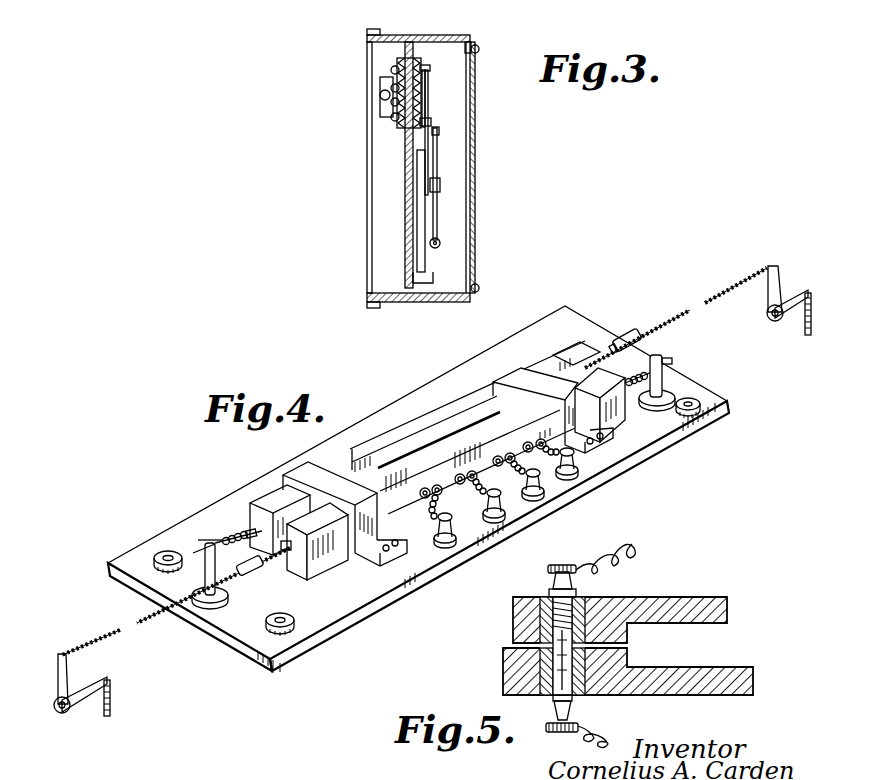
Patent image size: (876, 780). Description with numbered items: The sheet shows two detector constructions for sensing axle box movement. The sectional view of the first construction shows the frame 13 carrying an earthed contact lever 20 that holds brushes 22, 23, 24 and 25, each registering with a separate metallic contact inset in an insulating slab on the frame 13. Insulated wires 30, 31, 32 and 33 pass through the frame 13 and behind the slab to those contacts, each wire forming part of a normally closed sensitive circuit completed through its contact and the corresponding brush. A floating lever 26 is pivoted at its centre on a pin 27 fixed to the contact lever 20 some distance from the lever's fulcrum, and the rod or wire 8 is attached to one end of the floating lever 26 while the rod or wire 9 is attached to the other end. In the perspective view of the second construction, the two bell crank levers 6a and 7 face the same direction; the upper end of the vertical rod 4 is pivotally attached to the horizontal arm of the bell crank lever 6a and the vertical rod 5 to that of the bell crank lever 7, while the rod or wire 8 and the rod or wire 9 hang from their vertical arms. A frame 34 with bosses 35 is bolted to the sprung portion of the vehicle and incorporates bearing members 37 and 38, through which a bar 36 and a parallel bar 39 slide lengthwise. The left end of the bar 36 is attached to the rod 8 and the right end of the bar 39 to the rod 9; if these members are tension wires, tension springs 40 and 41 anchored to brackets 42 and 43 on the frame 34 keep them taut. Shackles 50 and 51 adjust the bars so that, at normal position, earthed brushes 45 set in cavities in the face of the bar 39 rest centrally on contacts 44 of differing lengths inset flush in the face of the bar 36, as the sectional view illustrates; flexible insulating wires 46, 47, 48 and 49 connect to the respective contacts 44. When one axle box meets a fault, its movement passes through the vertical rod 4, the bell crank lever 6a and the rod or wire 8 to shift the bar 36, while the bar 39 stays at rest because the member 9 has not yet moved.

In FIG. 3, the frame 13 is at (435, 34).
In FIG. 3, the brush 22 is at (430, 69).
In FIG. 3, the insulated wire 30 is at (391, 70).
In FIG. 3, the insulated wire 31 is at (391, 88).
In FIG. 3, the brush 23 is at (428, 88).
In FIG. 3, the contact lever 20 is at (421, 95).
In FIG. 3, the insulated wire 32 is at (391, 103).
In FIG. 3, the brush 24 is at (428, 108).
In FIG. 3, the insulated wire 33 is at (392, 119).
In FIG. 3, the brush 25 is at (430, 121).
In FIG. 3, the pin 27 is at (440, 188).
In FIG. 3, the floating lever 26 is at (437, 208).
In FIG. 4, the rod or wire 9 is at (680, 315).
In FIG. 4, the bell crank lever 7 is at (779, 272).
In FIG. 4, the vertical rod 5 is at (803, 318).
In FIG. 4, the shackle 51 is at (627, 332).
In FIG. 4, the bar 36 is at (325, 562).
In FIG. 5, the bar 36 is at (655, 695).
In FIG. 4, the tension spring 40 is at (640, 372).
In FIG. 4, the bar 39 is at (403, 447).
In FIG. 5, the bar 39 is at (683, 600).
In FIG. 4, the bearing member 38 is at (510, 376).
In FIG. 4, the bracket 42 is at (672, 362).
In FIG. 4, the boss 35 is at (168, 550).
In FIG. 4, the bearing member 37 is at (316, 470).
In FIG. 4, the frame 34 is at (637, 455).
In FIG. 4, the flexible insulating wire 49 is at (572, 478).
In FIG. 4, the flexible insulating wire 48 is at (513, 478).
In FIG. 4, the flexible insulating wire 47 is at (478, 490).
In FIG. 4, the flexible insulating wire 46 is at (428, 515).
In FIG. 4, the tension spring 41 is at (244, 533).
In FIG. 4, the shackle 50 is at (258, 570).
In FIG. 4, the bracket 43 is at (210, 600).
In FIG. 4, the rod or wire 8 is at (150, 623).
In FIG. 4, the vertical rod 4 is at (111, 698).
In FIG. 4, the bell crank lever 6a is at (88, 698).
In FIG. 5, the brush 45 is at (548, 630).
In FIG. 5, the contact 44 is at (505, 668).